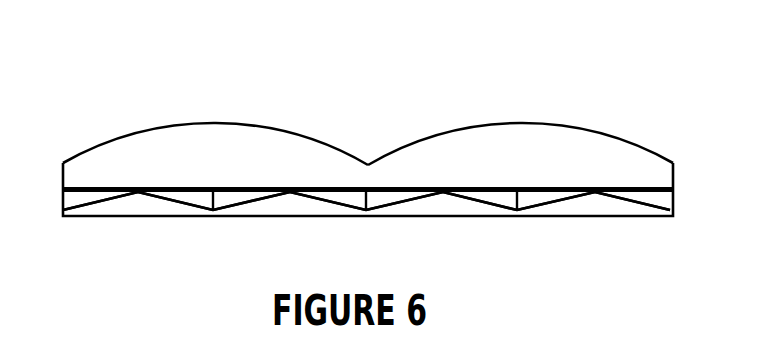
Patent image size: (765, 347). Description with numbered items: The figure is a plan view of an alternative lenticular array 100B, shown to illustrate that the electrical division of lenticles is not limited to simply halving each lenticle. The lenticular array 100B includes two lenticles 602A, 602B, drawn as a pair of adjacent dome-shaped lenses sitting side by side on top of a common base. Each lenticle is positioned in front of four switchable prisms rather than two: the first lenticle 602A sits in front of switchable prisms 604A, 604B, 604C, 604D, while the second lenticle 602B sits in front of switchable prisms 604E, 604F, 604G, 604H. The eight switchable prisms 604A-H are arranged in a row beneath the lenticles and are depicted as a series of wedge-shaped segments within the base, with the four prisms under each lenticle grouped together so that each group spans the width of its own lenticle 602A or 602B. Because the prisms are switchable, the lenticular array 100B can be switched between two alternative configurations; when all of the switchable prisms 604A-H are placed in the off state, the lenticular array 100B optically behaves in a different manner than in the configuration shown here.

The lenticular array 100B is at (414, 97).
The lenticle 602A is at (182, 123).
The lenticle 602B is at (562, 123).
The switchable prism 604A is at (85, 208).
The switchable prism 604B is at (177, 200).
The switchable prism 604C is at (245, 207).
The switchable prism 604D is at (337, 205).
The switchable prism 604E is at (388, 205).
The switchable prism 604F is at (482, 205).
The switchable prism 604G is at (550, 200).
The switchable prism 604H is at (645, 200).